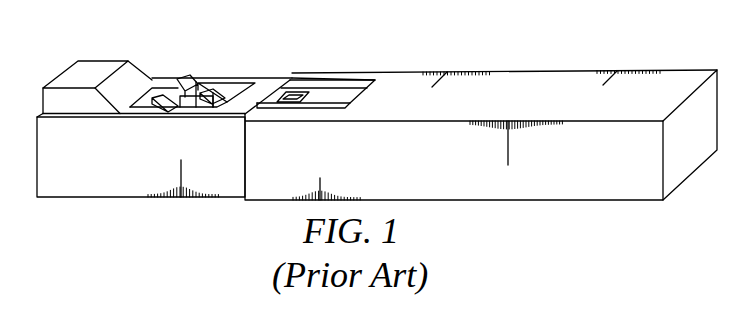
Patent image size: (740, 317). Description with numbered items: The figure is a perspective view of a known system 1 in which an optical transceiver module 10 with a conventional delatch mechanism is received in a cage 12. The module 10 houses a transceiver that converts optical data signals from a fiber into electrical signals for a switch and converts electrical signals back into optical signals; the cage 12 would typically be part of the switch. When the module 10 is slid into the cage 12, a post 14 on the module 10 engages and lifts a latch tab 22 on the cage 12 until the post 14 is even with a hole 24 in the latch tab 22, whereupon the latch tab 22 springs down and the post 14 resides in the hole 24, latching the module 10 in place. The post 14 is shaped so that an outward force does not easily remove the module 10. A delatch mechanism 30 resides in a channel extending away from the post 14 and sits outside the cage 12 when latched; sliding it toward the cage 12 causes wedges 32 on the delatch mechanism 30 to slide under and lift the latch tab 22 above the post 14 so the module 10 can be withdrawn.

The system 1 is at (602, 40).
The optical transceiver module 10 is at (95, 197).
The cage 12 is at (602, 200).
The post 14 is at (205, 93).
The latch tab 22 is at (342, 98).
The hole 24 is at (292, 97).
The delatch mechanism 30 is at (80, 75).
The wedges 32 is at (162, 97).